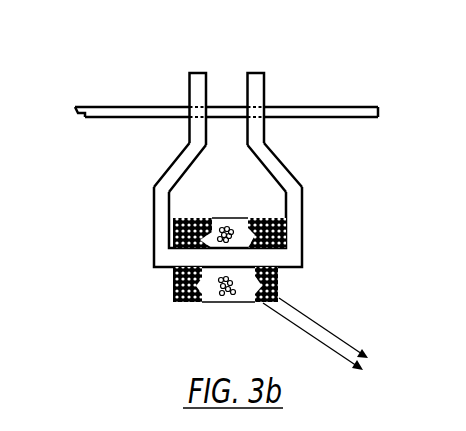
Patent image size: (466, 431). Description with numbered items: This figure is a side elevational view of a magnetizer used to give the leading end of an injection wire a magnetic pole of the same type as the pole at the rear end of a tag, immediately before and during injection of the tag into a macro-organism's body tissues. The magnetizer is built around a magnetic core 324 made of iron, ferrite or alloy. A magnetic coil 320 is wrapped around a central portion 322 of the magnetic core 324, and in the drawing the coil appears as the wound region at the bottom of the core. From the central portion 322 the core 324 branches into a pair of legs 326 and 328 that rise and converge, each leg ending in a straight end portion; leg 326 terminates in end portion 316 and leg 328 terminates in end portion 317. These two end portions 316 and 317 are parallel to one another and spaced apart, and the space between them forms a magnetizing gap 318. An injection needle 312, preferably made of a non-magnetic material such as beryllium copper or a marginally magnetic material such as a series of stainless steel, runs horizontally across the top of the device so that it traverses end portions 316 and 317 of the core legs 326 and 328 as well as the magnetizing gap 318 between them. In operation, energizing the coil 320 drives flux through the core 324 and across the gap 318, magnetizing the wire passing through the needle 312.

The injection needle 312 is at (97, 118).
The end portion 316 is at (195, 72).
The end portion 317 is at (263, 72).
The magnetizing gap 318 is at (227, 80).
The magnetic coil 320 is at (193, 303).
The central portion 322 is at (170, 260).
The magnetic core 324 is at (311, 274).
The leg 326 is at (178, 167).
The leg 328 is at (283, 163).